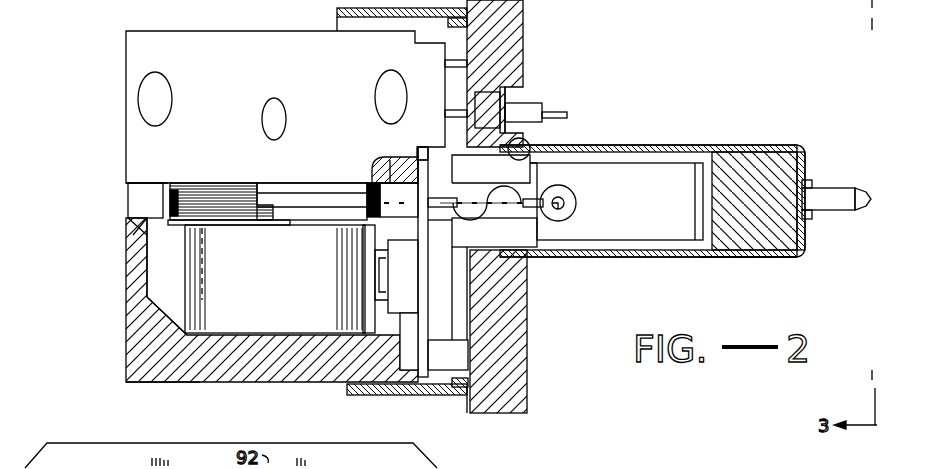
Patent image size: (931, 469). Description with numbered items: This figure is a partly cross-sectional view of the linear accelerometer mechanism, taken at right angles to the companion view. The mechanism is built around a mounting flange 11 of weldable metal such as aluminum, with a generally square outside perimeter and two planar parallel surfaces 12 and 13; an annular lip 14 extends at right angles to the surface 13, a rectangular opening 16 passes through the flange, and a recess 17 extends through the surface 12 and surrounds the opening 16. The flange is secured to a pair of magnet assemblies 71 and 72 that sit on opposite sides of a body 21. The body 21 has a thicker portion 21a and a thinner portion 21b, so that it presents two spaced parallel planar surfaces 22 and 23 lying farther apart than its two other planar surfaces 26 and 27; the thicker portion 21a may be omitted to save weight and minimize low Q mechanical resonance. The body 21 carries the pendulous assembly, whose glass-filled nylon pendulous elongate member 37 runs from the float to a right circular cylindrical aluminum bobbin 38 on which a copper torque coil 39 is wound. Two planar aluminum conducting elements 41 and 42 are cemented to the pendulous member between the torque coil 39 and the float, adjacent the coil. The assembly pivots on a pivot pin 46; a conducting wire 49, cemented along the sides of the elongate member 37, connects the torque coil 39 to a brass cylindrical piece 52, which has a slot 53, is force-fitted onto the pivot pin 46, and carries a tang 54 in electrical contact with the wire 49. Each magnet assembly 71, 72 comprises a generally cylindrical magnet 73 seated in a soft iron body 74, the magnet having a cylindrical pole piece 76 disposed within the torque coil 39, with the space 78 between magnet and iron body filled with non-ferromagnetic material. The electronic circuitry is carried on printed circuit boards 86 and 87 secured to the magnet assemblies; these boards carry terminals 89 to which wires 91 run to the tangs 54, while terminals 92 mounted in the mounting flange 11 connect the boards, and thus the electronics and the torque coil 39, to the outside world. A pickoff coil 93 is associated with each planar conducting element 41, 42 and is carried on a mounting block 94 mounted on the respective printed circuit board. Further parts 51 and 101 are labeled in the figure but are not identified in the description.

The mounting flange 11 is at (517, 328).
The planar parallel surface 12 is at (524, 63).
The planar parallel surface 13 is at (468, 392).
The annular lip 14 is at (468, 378).
The rectangular opening 16 is at (526, 172).
The recess 17 is at (530, 150).
The body 21 is at (733, 145).
The thicker portion of the body 21a is at (773, 178).
The thinner portion of the body 21b is at (143, 202).
The planar surface 22 is at (766, 149).
The planar surface 23 is at (758, 250).
The planar surface 26 is at (145, 182).
The planar surface 27 is at (140, 226).
The pendulous elongate member 37 is at (496, 200).
The bobbin 38 is at (208, 184).
The torque coil 39 is at (178, 218).
The planar conducting element 41 is at (390, 180).
The planar conducting element 42 is at (347, 230).
The pivot pin 46 is at (568, 213).
The conducting wire 49 is at (538, 250).
The upper bellows 51 is at (493, 212).
The cylindrical piece 52 is at (565, 195).
The slot 53 is at (570, 207).
The tang 54 is at (537, 193).
The magnet assembly 71 is at (118, 70).
The magnet assembly 72 is at (117, 355).
The magnet 73 is at (217, 290).
The soft iron body 74 is at (172, 376).
The cylindrical pole piece 76 is at (293, 210).
The space 78 is at (165, 267).
The printed circuit board 86 is at (432, 117).
The printed circuit board 87 is at (410, 343).
The terminal 89 is at (444, 198).
The wire 91 is at (470, 229).
The terminal 92 is at (534, 110).
The pickoff coil 93 is at (377, 238).
The mounting block 94 is at (377, 278).
The bottom plate 101 is at (450, 397).